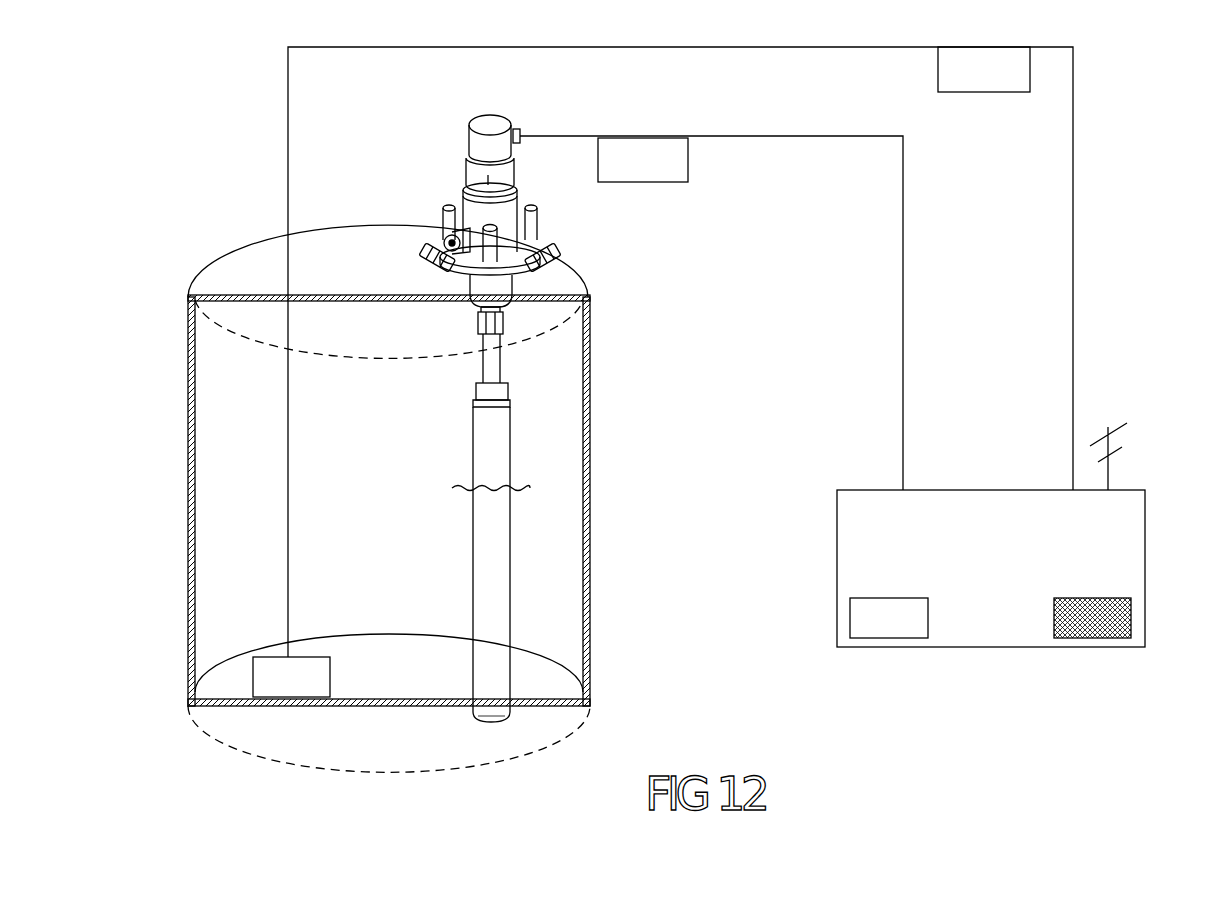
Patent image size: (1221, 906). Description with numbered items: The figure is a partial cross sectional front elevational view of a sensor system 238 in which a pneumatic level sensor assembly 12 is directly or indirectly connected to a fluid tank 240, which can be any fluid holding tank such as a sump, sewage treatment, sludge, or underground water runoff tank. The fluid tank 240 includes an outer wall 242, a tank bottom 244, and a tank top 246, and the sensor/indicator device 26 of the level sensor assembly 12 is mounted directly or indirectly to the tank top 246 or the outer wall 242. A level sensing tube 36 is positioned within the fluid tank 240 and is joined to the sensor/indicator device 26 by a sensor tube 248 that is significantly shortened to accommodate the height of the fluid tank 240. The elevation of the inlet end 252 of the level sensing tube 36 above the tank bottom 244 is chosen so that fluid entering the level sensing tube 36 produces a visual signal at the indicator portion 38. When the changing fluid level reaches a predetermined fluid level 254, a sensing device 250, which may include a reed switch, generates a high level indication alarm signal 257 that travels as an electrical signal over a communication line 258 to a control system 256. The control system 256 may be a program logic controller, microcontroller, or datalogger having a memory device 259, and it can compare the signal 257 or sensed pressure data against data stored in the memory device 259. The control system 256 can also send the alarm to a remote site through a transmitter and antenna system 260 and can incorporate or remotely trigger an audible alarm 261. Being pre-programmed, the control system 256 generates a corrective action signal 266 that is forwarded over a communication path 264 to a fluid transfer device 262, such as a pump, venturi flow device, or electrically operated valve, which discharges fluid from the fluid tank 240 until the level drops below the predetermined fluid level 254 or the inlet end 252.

The sensor system 238 is at (232, 156).
The pneumatic level sensor assembly 12 is at (430, 148).
The indicator portion 38 is at (494, 118).
The sensor/indicator device 26 is at (470, 200).
The sensing device 250 is at (520, 132).
The communication path 264 is at (660, 48).
The communication line 258 is at (780, 136).
The high level indication alarm signal 257 is at (634, 182).
The corrective action signal 266 is at (978, 92).
The tank top 246 is at (228, 297).
The outer wall 242 is at (190, 398).
The fluid tank 240 is at (165, 504).
The tank bottom 244 is at (232, 706).
The sensor tube 248 is at (495, 358).
The predetermined fluid level 254 is at (522, 488).
The level sensing tube 36 is at (500, 572).
The inlet end 252 is at (504, 728).
The fluid transfer device 262 is at (291, 677).
The control system 256 is at (1016, 535).
The memory device 259 is at (889, 618).
The audible alarm 261 is at (1092, 618).
The transmitter and antenna system 260 is at (1110, 473).